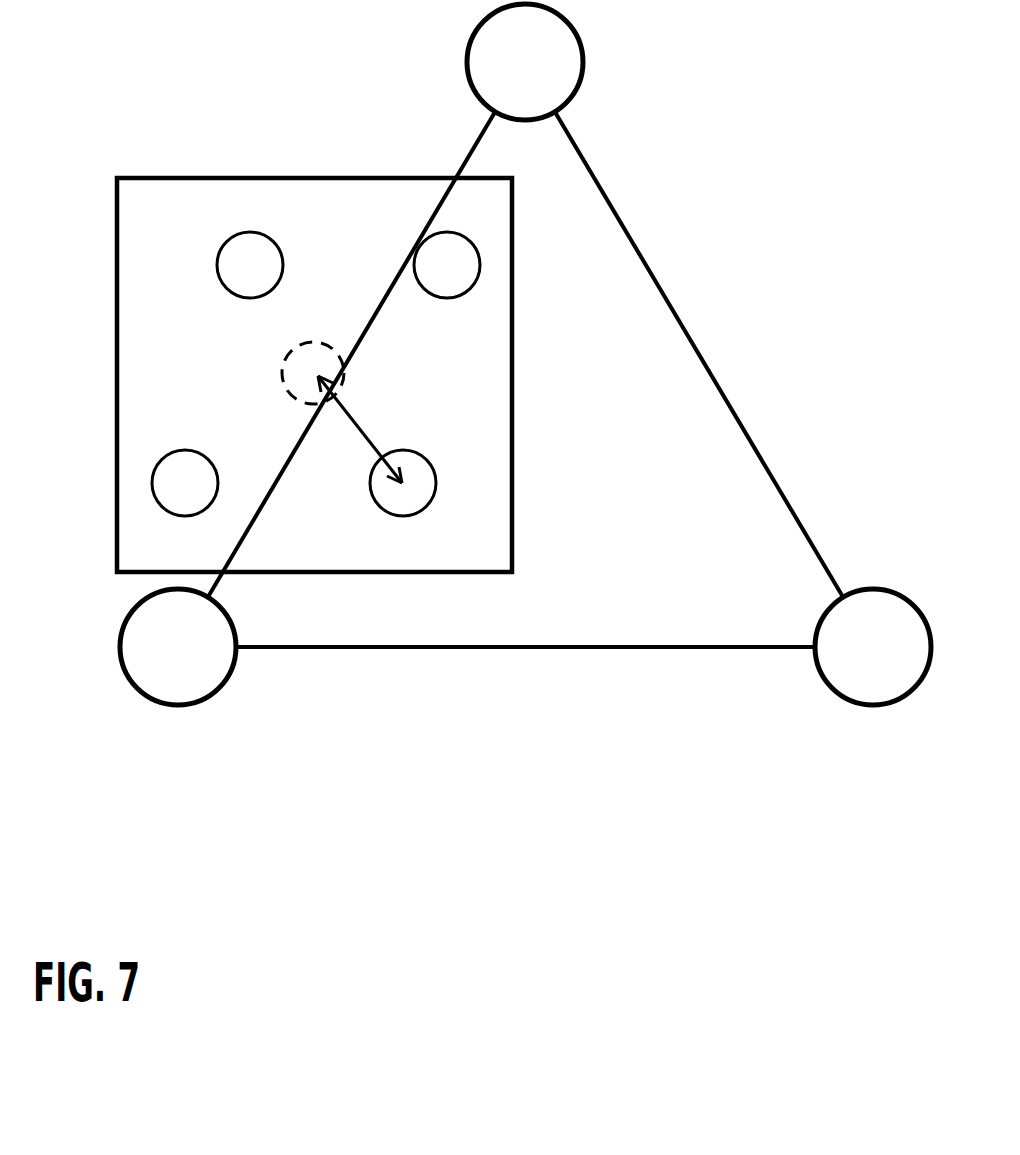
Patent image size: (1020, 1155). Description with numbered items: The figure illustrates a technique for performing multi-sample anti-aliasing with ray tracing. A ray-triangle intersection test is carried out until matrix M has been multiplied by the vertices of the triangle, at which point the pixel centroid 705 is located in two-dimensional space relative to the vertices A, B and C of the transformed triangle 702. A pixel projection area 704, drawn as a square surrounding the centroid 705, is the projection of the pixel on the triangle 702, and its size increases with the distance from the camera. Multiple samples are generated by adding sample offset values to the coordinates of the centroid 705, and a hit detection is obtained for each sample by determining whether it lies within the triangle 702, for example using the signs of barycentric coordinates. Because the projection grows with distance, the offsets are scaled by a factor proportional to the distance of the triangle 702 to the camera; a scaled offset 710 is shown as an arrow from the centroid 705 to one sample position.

The transformed triangle 702 is at (608, 168).
The pixel projection area 704 is at (302, 178).
The pixel centroid 705 is at (288, 352).
The scaled offset 710 is at (357, 438).